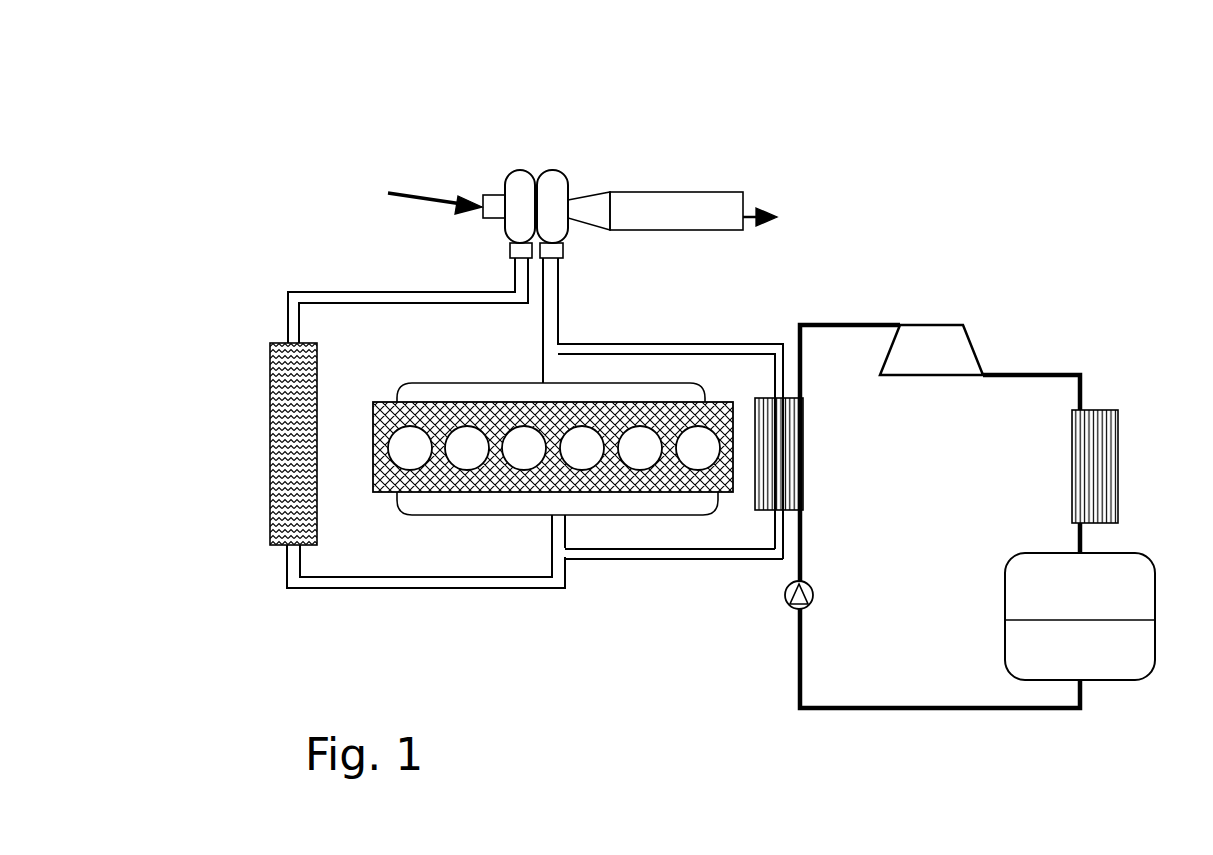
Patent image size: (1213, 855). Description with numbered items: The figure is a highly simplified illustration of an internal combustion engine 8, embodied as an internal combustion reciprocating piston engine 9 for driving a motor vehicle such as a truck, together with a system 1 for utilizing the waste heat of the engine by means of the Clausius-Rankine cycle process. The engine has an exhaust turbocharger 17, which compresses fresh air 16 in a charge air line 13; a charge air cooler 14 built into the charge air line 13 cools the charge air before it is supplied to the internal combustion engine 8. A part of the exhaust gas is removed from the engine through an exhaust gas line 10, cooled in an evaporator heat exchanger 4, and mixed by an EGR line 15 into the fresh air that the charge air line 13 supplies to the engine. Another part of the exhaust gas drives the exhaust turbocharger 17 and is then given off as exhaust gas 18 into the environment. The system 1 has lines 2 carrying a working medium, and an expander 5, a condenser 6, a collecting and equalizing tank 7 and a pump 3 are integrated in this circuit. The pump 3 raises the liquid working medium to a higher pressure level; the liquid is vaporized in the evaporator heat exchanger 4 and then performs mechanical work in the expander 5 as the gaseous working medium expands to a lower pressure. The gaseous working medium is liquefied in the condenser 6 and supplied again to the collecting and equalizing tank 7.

The system for utilizing waste heat 1 is at (1143, 272).
The lines 2 is at (882, 708).
The pump 3 is at (793, 610).
The evaporator heat exchanger 4 is at (757, 512).
The expander 5 is at (930, 347).
The condenser 6 is at (1113, 445).
The collecting and equalizing tank 7 is at (1107, 677).
The internal combustion engine 8 is at (457, 490).
The internal combustion reciprocating piston engine 9 is at (554, 448).
The exhaust gas line 10 is at (560, 283).
The charge air line 13 is at (292, 290).
The charge air cooler 14 is at (270, 343).
The EGR line 15 is at (610, 558).
The fresh air 16 is at (397, 185).
The exhaust turbocharger 17 is at (528, 163).
The exhaust gas 18 is at (755, 182).